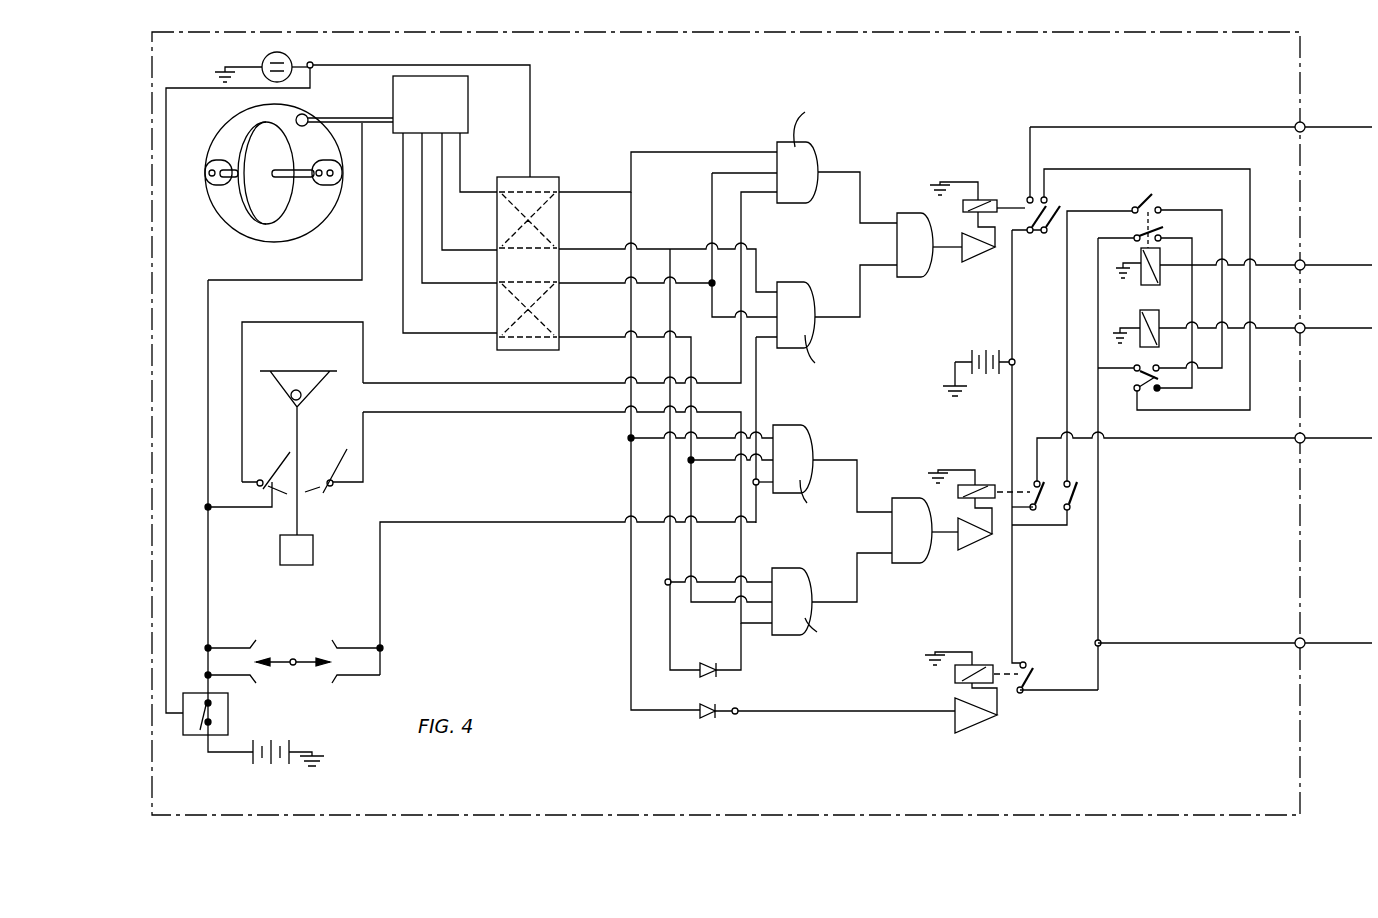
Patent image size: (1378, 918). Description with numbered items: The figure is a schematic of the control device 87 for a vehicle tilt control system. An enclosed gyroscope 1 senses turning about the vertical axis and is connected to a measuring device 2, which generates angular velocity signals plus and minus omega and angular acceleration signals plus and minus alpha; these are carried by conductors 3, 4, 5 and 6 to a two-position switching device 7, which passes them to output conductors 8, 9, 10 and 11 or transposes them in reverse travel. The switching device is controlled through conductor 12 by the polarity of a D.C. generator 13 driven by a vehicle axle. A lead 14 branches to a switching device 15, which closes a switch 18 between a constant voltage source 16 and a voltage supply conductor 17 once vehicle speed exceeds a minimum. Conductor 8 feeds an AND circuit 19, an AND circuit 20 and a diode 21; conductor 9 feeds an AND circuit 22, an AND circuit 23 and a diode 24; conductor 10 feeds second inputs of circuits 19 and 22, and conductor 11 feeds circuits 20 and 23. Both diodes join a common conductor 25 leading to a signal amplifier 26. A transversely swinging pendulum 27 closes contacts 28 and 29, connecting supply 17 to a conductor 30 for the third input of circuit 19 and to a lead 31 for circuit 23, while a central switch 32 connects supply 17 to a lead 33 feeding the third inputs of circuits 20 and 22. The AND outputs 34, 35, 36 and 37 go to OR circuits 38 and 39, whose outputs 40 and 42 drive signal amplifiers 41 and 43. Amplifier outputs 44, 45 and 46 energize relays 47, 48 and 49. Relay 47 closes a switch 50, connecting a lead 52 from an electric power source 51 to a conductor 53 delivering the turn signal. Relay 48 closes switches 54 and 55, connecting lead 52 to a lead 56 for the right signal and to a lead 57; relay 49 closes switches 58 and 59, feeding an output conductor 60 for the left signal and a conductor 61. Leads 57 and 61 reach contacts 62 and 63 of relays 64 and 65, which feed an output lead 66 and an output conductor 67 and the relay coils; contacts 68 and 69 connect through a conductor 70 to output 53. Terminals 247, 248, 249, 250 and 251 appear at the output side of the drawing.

The gyroscope 1 is at (273, 202).
The measuring device 2 is at (469, 121).
The conductor 3 is at (480, 186).
The conductor 4 is at (477, 240).
The conductor 5 is at (481, 283).
The conductor 6 is at (478, 330).
The switching device 7 is at (545, 176).
The output conductor 8 is at (579, 191).
The output conductor 9 is at (580, 248).
The output conductor 10 is at (578, 282).
The output conductor 11 is at (580, 336).
The conductor 12 is at (537, 100).
The D.C. generator 13 is at (264, 58).
The electrical lead 14 is at (166, 473).
The switching device 15 is at (228, 714).
The constant voltage source 16 is at (288, 748).
The voltage supply conductor 17 is at (208, 603).
The switch 18 is at (195, 725).
The AND circuit 19 is at (790, 140).
The AND circuit 20 is at (792, 430).
The diode 21 is at (709, 720).
The AND circuit 22 is at (800, 298).
The AND circuit 23 is at (790, 570).
The diode 24 is at (712, 661).
The common conductor 25 is at (797, 710).
The signal amplifier 26 is at (968, 736).
The pendulum 27 is at (313, 550).
The contact 28 is at (288, 462).
The contact 29 is at (345, 460).
The conductor 30 is at (462, 385).
The lead 31 is at (490, 413).
The central switch 32 is at (295, 658).
The lead 33 is at (507, 523).
The output 34 is at (845, 170).
The output 35 is at (848, 320).
The output 36 is at (848, 460).
The output 37 is at (858, 597).
The OR circuit 38 is at (912, 278).
The OR circuit 39 is at (925, 565).
The output 40 is at (945, 246).
The signal amplifier 41 is at (962, 262).
The output 42 is at (945, 531).
The signal amplifier 43 is at (962, 551).
The output 44 is at (956, 680).
The output 45 is at (992, 250).
The output 46 is at (992, 545).
The relay 47 is at (978, 662).
The relay 48 is at (983, 196).
The relay 49 is at (990, 482).
The switch 50 is at (1035, 672).
The electric power source 51 is at (985, 350).
The lead 52 is at (1013, 412).
The conductor 53 is at (1186, 646).
The switch 54 is at (1026, 195).
The relay switch 55 is at (1052, 212).
The lead 56 is at (1120, 126).
The lead 57 is at (1256, 196).
The relay switch 58 is at (1040, 480).
The relay switch 59 is at (1070, 510).
The output conductor 60 is at (1222, 440).
The conductor 61 is at (1072, 375).
The contact 62 is at (1138, 386).
The contact 63 is at (1152, 205).
The relay 64 is at (1144, 311).
The relay 65 is at (1155, 283).
The output lead 66 is at (1262, 266).
The output conductor 67 is at (1268, 330).
The contact 68 is at (1164, 236).
The contact 69 is at (1146, 366).
The conductor 70 is at (1100, 516).
The control device 87 is at (140, 305).
The terminal 247 is at (1306, 638).
The terminal 248 is at (1306, 433).
The terminal 249 is at (1306, 122).
The terminal 250 is at (1306, 260).
The terminal 251 is at (1306, 323).